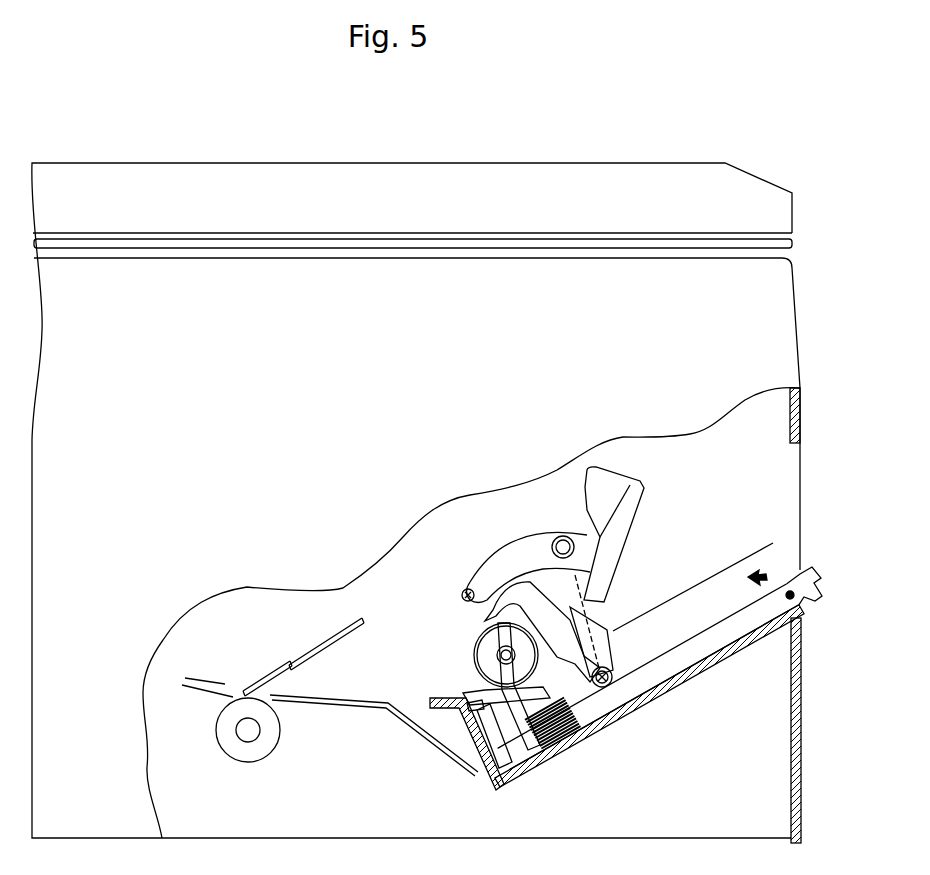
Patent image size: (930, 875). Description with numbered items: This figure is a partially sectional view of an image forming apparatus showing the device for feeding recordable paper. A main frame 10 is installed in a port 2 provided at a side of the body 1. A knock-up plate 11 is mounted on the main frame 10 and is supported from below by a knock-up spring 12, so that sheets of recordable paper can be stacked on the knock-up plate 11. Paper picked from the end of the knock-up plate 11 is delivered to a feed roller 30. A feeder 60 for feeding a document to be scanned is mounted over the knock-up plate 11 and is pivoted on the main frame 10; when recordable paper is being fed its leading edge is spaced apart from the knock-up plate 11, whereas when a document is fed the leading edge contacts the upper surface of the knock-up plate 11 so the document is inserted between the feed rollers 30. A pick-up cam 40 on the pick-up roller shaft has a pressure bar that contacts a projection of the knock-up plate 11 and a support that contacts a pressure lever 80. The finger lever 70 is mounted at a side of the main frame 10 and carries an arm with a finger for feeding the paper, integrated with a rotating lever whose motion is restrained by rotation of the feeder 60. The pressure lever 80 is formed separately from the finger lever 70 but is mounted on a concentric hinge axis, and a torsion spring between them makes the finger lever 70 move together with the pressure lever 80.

The body 1 is at (786, 320).
The port 2 is at (786, 492).
The main frame 10 is at (717, 655).
The knock-up plate 11 is at (748, 608).
The knock-up spring 12 is at (571, 723).
The feed roller 30 is at (265, 745).
The pick-up cam 40 is at (486, 668).
The feeder 60 is at (520, 555).
The finger lever 70 is at (607, 617).
The pressure lever 80 is at (490, 613).